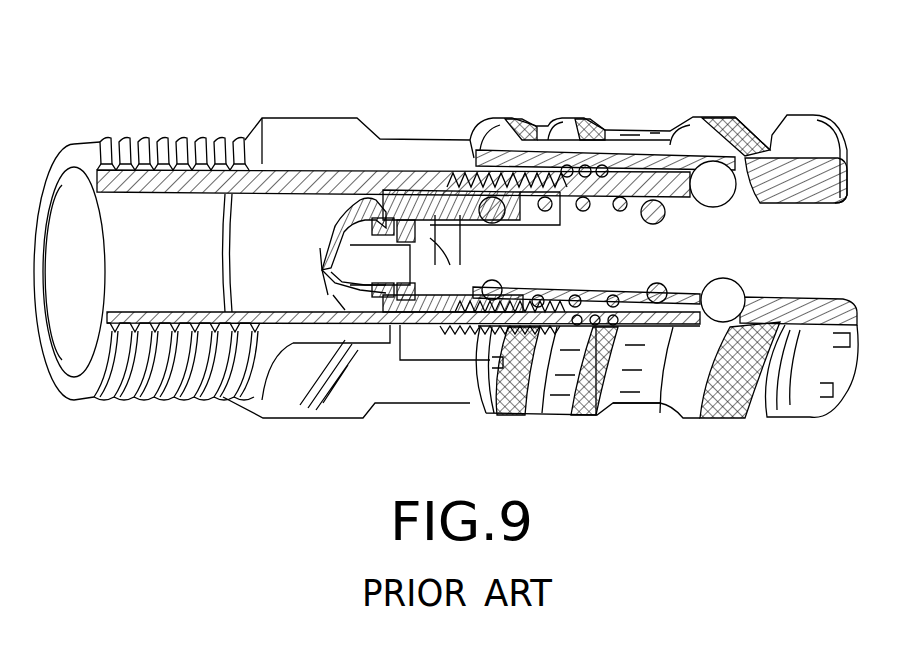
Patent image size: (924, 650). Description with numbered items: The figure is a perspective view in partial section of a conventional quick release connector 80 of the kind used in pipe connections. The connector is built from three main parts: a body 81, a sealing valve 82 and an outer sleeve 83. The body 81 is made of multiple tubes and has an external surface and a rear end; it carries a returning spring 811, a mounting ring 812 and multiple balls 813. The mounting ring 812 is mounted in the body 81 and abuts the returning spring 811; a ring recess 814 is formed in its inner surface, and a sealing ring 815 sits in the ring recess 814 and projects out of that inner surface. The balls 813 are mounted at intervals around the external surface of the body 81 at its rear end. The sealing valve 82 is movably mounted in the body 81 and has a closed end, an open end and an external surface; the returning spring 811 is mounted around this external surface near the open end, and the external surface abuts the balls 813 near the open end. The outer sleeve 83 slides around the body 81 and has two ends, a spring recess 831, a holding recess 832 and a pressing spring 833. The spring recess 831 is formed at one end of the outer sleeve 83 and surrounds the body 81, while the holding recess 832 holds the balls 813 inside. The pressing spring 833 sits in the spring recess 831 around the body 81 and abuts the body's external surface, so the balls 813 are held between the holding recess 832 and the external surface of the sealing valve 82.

The quick release connector 80 is at (520, 82).
The body 81 is at (282, 112).
The sealing valve 82 is at (323, 252).
The outer sleeve 83 is at (710, 112).
The returning spring 811 is at (620, 317).
The mounting ring 812 is at (427, 195).
The balls 813 is at (745, 283).
The ring recess 814 is at (486, 300).
The sealing ring 815 is at (497, 220).
The spring recess 831 is at (607, 324).
The holding recess 832 is at (757, 200).
The pressing spring 833 is at (605, 170).